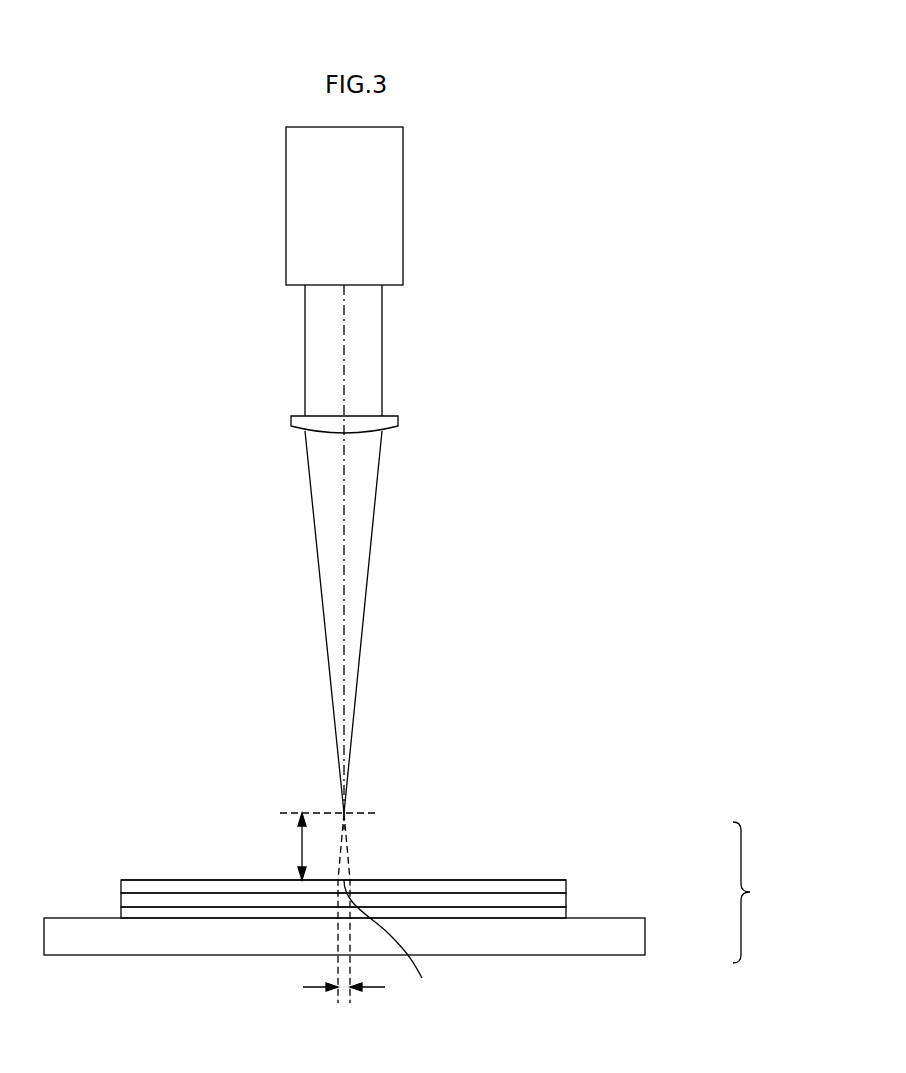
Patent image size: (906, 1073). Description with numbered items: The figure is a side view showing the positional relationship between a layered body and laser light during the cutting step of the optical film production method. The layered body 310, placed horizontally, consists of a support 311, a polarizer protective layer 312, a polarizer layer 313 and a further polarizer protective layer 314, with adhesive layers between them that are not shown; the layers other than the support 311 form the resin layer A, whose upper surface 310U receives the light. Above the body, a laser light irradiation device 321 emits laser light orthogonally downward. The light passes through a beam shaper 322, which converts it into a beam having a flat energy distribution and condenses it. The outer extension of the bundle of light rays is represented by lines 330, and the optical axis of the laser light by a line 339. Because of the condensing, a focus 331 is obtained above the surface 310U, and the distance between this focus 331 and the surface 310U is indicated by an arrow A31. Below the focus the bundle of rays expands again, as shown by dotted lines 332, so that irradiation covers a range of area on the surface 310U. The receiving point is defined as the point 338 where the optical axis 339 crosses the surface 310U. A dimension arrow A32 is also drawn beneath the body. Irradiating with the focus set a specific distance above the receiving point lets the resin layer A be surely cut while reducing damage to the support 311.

The laser light irradiation device 321 is at (373, 225).
The optical axis 339 is at (344, 355).
The beam shaper 322 is at (398, 420).
The lines 330 is at (430, 530).
The focus 331 is at (347, 810).
The dotted lines 332 is at (346, 840).
The arrow A31 is at (300, 845).
The surface 310U is at (148, 878).
The polarizer protective layer 314 is at (566, 887).
The polarizer layer 313 is at (566, 900).
The polarizer protective layer 312 is at (566, 913).
The support 311 is at (645, 937).
The layered body 310 is at (768, 892).
The point 338 is at (396, 944).
The beam spot width A32 is at (318, 990).